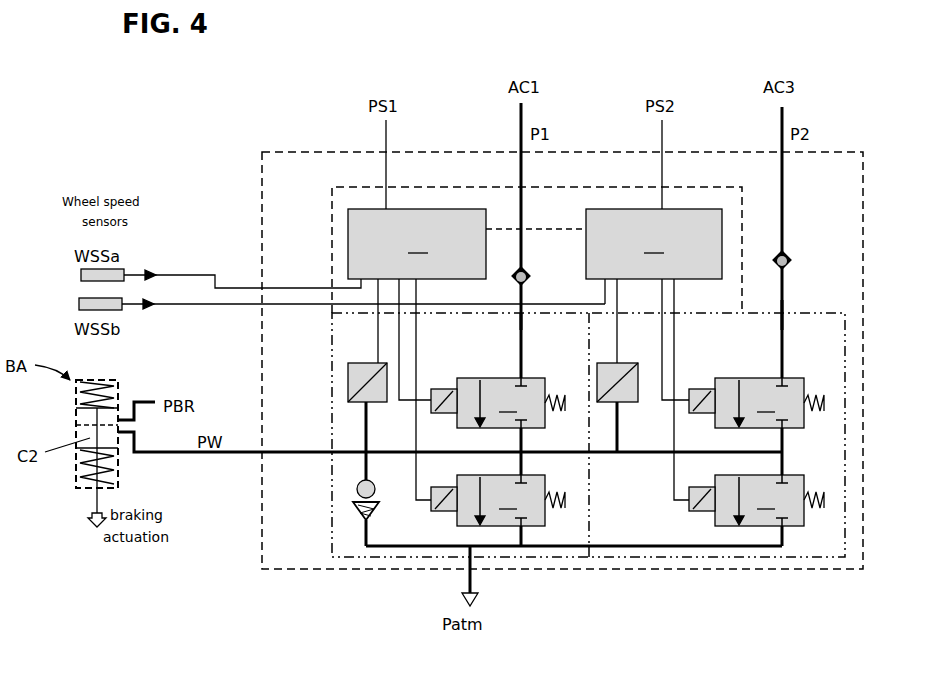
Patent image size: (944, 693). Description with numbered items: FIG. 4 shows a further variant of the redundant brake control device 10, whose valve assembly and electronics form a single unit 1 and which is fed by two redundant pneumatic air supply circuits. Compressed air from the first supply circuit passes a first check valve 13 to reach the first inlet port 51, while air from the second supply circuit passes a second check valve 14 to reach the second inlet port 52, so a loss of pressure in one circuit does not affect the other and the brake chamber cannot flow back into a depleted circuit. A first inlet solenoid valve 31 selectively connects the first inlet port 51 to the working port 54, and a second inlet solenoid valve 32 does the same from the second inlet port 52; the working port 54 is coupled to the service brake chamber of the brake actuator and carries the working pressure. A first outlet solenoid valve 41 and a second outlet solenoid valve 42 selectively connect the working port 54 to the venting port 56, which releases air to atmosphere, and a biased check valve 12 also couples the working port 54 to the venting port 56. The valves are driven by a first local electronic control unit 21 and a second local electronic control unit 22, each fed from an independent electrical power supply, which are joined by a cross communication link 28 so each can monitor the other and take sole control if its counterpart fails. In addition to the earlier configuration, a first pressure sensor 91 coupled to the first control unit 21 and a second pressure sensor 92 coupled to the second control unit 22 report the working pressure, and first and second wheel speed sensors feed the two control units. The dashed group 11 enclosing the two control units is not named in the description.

The single unit 1 is at (849, 332).
The brake control device 10 is at (865, 198).
The electronic control unit arrangement 11 is at (434, 182).
The biased check valve 12 is at (352, 510).
The first check valve 13 is at (526, 270).
The second check valve 14 is at (786, 254).
The first local electronic control unit 21 is at (417, 354).
The second local electronic control unit 22 is at (654, 354).
The cross communication link 28 is at (551, 228).
The first inlet solenoid valve 31 is at (498, 403).
The second inlet solenoid valve 32 is at (756, 403).
The first outlet solenoid valve 41 is at (498, 500).
The second outlet solenoid valve 42 is at (756, 500).
The first inlet port 51 is at (519, 318).
The second inlet port 52 is at (785, 310).
The working port 54 is at (331, 449).
The venting port 56 is at (474, 553).
The first pressure sensor 91 is at (347, 380).
The second pressure sensor 92 is at (596, 380).